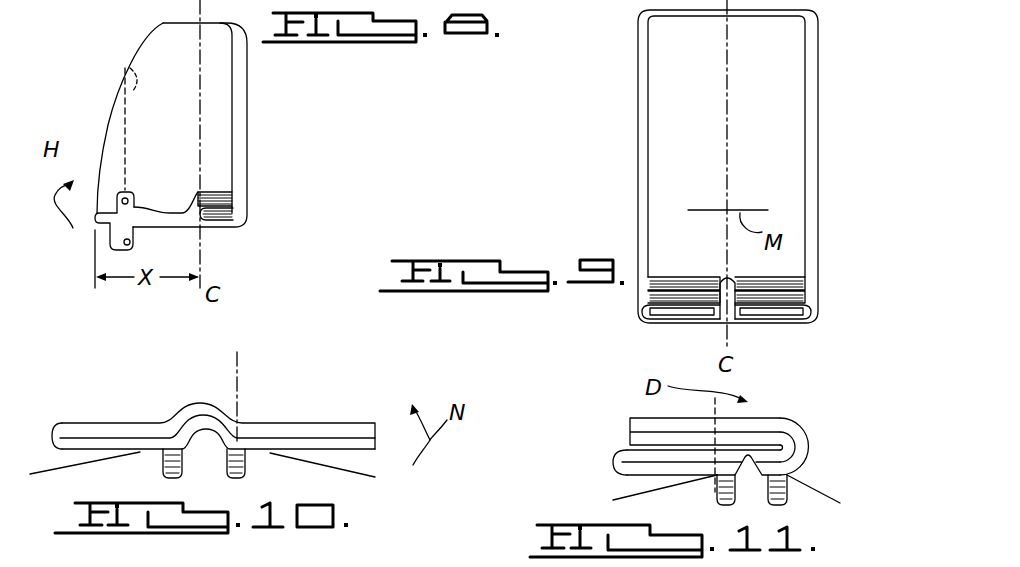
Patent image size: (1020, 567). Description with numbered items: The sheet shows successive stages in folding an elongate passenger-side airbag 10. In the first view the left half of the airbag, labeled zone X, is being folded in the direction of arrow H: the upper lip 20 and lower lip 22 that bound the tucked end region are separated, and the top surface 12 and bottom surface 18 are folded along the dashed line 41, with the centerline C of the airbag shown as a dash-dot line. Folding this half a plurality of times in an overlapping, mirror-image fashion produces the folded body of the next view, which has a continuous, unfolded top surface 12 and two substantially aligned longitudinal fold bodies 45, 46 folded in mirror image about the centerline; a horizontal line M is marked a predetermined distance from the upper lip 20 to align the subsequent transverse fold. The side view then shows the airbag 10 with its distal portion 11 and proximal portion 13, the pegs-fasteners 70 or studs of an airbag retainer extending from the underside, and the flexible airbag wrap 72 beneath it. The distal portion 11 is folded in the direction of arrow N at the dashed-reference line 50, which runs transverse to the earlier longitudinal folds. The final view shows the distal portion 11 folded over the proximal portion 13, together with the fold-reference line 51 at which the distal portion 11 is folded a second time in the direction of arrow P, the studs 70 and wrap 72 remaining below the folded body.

In FIG. 10, the airbag 10 is at (70, 417).
In FIG. 10, the distal portion 11 is at (329, 417).
In FIG. 11, the distal portion 11 is at (626, 423).
In FIG. 8, the top surface 12 is at (178, 138).
In FIG. 9, the top surface 12 is at (704, 138).
In FIG. 10, the proximal portion 13 is at (127, 417).
In FIG. 11, the proximal portion 13 is at (608, 460).
In FIG. 8, the bottom surface 18 is at (209, 240).
In FIG. 8, the upper lip 20 is at (133, 205).
In FIG. 8, the lower lip 22 is at (131, 243).
In FIG. 8, the dashed line 41 is at (123, 66).
In FIG. 9, the longitudinal fold body 45 is at (668, 342).
In FIG. 9, the longitudinal fold body 46 is at (786, 337).
In FIG. 9, the dashed-reference line 50 is at (740, 204).
In FIG. 10, the dashed-reference line 50 is at (239, 404).
In FIG. 11, the fold-reference line 51 is at (722, 430).
In FIG. 10, the pegs-fasteners 70 is at (183, 462).
In FIG. 10, the airbag wrap 72 is at (74, 467).
In FIG. 11, the airbag wrap 72 is at (627, 497).